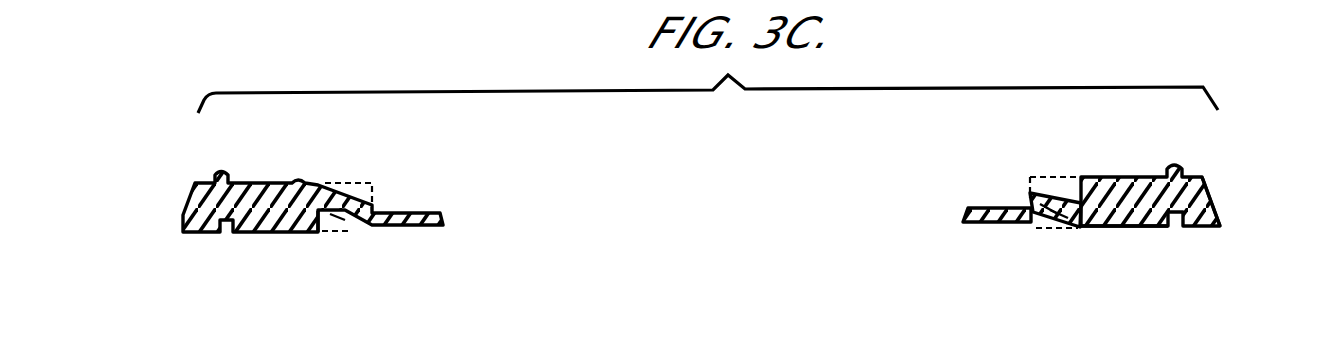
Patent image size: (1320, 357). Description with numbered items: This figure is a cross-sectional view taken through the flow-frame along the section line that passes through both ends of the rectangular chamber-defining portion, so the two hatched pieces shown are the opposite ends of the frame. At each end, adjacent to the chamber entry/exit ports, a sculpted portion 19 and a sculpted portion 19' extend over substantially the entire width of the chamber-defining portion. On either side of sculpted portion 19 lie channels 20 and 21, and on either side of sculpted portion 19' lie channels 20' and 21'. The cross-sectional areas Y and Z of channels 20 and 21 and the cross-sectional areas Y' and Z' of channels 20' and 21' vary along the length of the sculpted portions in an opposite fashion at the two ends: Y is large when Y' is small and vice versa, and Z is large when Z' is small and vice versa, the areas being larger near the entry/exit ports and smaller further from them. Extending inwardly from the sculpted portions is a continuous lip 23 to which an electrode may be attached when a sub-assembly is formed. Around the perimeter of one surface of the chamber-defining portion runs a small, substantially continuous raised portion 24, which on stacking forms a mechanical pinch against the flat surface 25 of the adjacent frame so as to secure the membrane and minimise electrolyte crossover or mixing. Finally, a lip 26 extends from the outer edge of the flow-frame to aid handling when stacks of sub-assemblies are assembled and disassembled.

The sculpted portion 19 is at (1035, 250).
The channel 20 is at (1057, 171).
The channel 21 is at (1086, 247).
The continuous lip 23 is at (980, 207).
The raised portion 24 is at (1107, 176).
The flat surface 25 is at (1143, 227).
The lip 26 is at (1212, 203).
The sculpted portion 19' is at (356, 253).
The channel 20' is at (313, 178).
The channel 21' is at (301, 252).
The cross-sectional area Y is at (1039, 163).
The cross-sectional area Z is at (1020, 255).
The cross-sectional area Y' is at (367, 164).
The cross-sectional area Z' is at (386, 245).